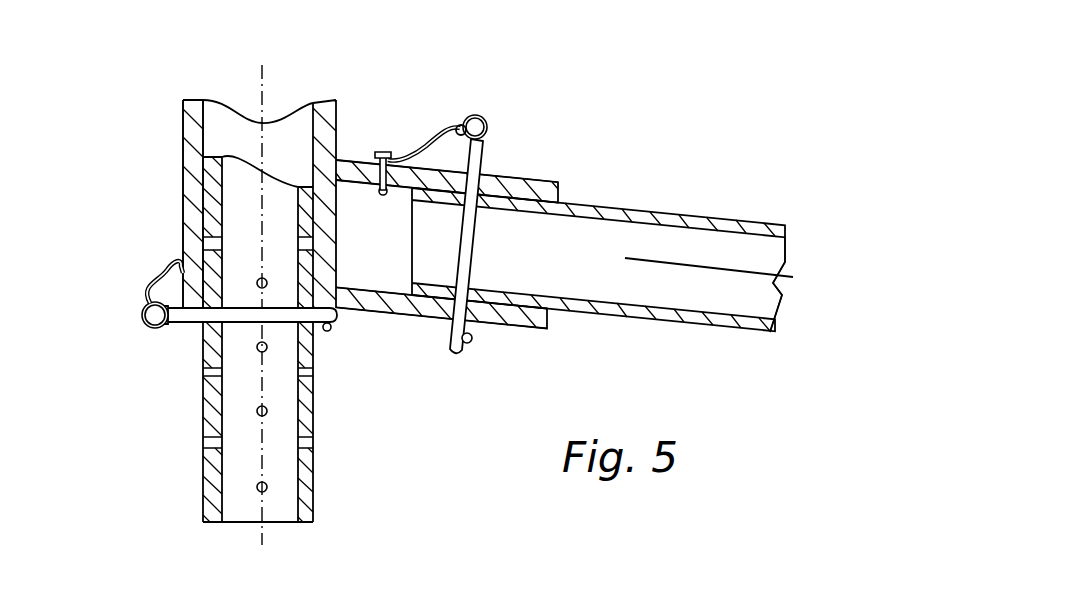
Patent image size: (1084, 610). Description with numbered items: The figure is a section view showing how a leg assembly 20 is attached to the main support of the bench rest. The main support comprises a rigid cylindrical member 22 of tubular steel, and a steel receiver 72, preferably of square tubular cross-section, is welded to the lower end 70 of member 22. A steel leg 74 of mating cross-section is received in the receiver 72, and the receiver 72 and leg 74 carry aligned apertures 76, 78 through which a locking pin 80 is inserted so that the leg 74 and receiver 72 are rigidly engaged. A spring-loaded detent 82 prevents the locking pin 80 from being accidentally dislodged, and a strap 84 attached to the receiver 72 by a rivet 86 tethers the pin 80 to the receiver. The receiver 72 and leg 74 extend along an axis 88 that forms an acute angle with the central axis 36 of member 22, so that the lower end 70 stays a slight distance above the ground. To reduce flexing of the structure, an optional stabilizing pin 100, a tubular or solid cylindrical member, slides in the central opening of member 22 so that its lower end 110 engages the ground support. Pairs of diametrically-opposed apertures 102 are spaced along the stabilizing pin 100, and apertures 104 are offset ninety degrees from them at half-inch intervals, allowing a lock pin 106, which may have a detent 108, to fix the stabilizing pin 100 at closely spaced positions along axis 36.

The leg assembly 20 is at (718, 206).
The rigid cylindrical member 22 is at (183, 118).
The axis 36 is at (262, 75).
The lower end 70 is at (183, 241).
The receiver 72 is at (545, 180).
The leg 74 is at (618, 205).
The aperture 76 is at (502, 178).
The aperture 78 is at (503, 327).
The locking pin 80 is at (448, 341).
The spring-loaded detent 82 is at (470, 342).
The strap 84 is at (436, 126).
The rivet 86 is at (385, 150).
The axis 88 is at (793, 277).
The stabilizing pin 100 is at (315, 403).
The apertures 102 is at (202, 379).
The apertures 104 is at (267, 411).
The lock pin 106 is at (188, 323).
The detent 108 is at (324, 328).
The lower end 110 is at (305, 523).